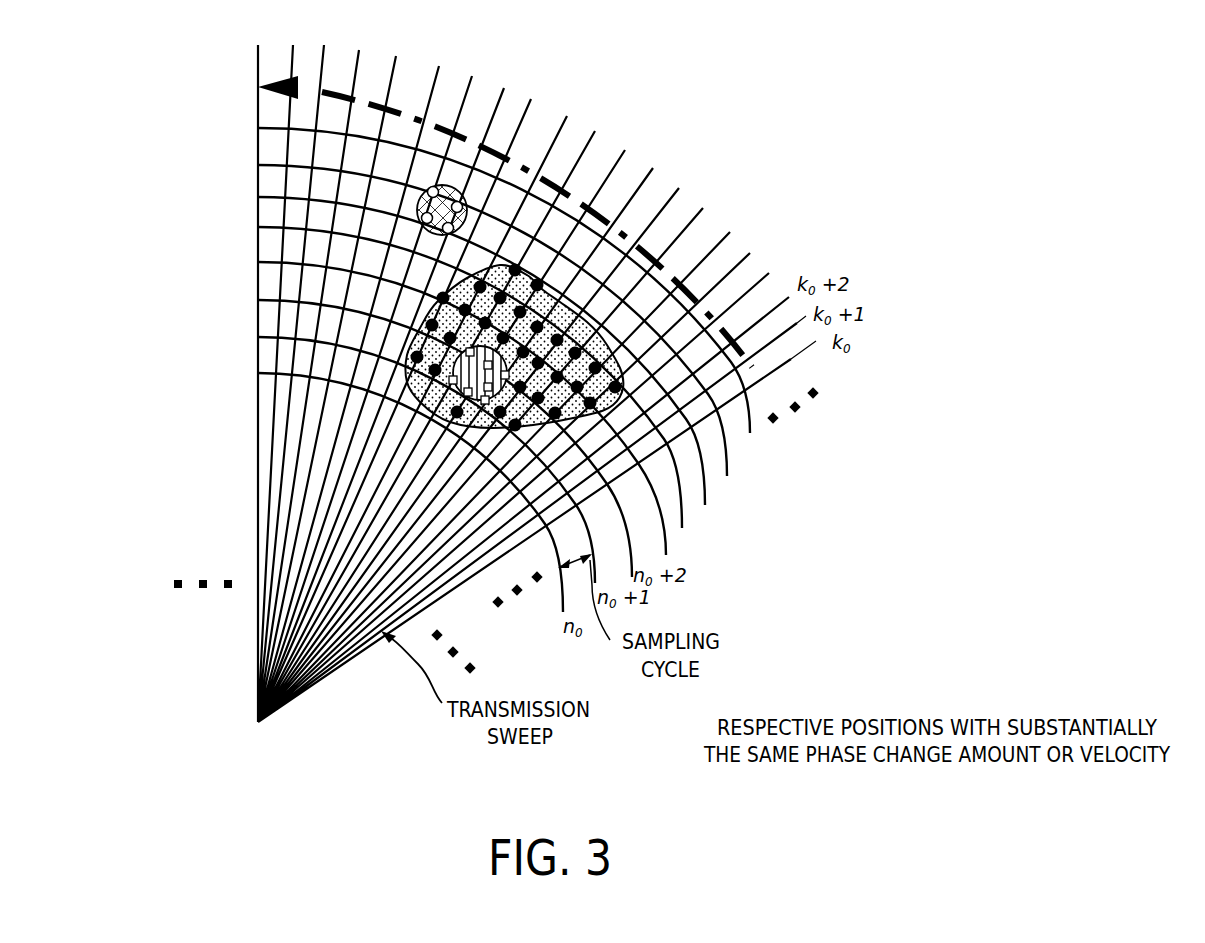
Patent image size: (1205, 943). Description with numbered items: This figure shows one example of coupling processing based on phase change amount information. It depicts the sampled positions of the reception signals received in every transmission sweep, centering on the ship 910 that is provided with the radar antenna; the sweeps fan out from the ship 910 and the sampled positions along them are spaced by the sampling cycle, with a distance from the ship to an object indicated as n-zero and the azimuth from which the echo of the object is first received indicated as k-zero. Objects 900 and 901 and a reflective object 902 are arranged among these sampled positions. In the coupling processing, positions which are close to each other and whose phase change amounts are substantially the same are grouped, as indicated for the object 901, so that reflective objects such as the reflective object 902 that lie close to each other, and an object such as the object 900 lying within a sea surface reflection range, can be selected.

The object 900 is at (455, 202).
The object 901 is at (560, 302).
The reflective object 902 is at (683, 438).
The ship 910 is at (537, 413).